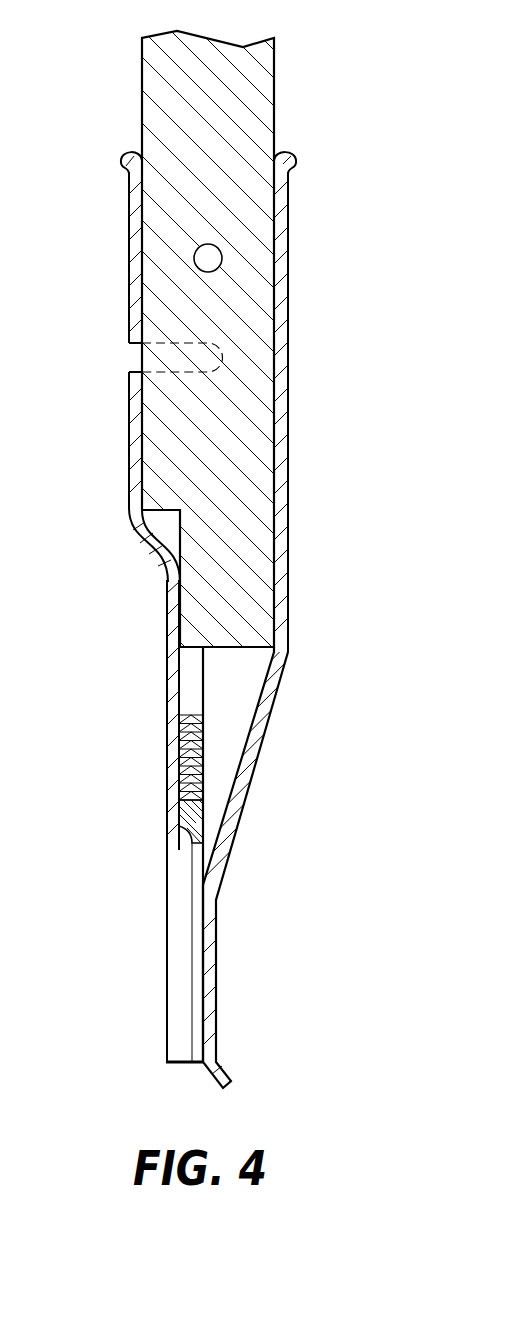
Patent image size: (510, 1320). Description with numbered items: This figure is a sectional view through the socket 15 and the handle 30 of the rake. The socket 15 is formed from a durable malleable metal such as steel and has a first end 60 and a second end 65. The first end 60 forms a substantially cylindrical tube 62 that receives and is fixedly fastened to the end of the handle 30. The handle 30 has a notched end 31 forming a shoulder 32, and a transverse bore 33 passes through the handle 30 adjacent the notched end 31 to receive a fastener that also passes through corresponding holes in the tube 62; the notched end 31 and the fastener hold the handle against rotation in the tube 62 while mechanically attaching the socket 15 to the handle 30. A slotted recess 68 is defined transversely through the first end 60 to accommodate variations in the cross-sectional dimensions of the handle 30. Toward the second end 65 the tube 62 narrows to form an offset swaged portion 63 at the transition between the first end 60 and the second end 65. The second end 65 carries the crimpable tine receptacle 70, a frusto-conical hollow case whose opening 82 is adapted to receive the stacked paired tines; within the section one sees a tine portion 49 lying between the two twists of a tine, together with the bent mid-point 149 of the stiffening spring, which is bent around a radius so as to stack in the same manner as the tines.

The handle 30 is at (282, 72).
The socket 15 is at (300, 152).
The transverse bore 33 is at (222, 259).
The slotted recess 68 is at (131, 372).
The first end 60 is at (290, 443).
The cylindrical tube 62 is at (287, 498).
The shoulder 32 is at (144, 537).
The notched end 31 is at (268, 578).
The offset swaged portion 63 is at (270, 656).
The tine portion 49 is at (163, 800).
The mid-point of stiffening spring 149 is at (176, 820).
The second end 65 is at (140, 957).
The tine receptacle 70 is at (219, 964).
The opening 82 is at (174, 1062).